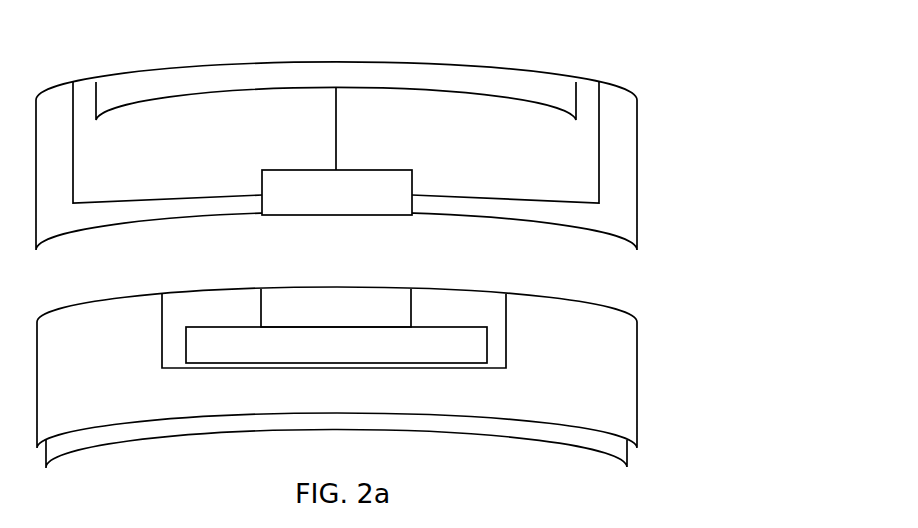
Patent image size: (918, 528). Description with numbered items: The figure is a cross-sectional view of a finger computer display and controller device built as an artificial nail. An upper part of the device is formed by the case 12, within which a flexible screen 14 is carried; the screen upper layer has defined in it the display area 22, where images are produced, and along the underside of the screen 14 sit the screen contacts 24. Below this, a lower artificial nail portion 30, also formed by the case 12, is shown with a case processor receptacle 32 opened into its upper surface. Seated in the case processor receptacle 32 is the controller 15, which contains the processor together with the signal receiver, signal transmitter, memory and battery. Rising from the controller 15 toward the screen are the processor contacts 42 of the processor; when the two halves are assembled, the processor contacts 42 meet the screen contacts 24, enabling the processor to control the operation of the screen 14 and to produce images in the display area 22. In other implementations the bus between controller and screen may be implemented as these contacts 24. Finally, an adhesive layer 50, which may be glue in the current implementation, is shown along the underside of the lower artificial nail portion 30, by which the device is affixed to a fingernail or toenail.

The case 12 is at (637, 162).
The flexible screen 14 is at (600, 100).
The display area 22 is at (497, 83).
The screen contacts 24 is at (324, 203).
The lower artificial nail portion 30 is at (637, 380).
The adhesive layer 50 is at (580, 448).
The case processor receptacle 32 is at (487, 307).
The processor contacts 42 is at (325, 315).
The controller 15 is at (330, 355).